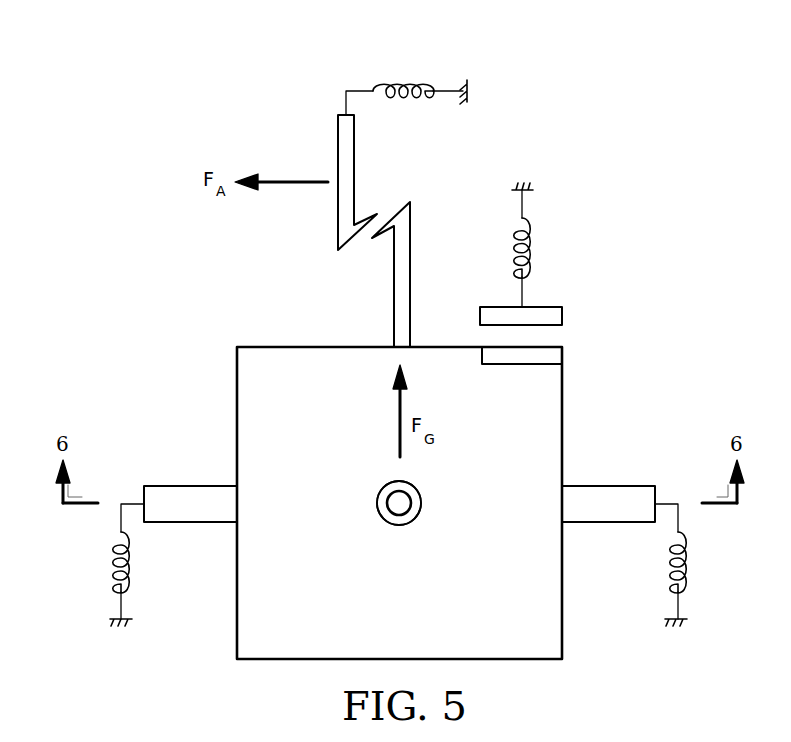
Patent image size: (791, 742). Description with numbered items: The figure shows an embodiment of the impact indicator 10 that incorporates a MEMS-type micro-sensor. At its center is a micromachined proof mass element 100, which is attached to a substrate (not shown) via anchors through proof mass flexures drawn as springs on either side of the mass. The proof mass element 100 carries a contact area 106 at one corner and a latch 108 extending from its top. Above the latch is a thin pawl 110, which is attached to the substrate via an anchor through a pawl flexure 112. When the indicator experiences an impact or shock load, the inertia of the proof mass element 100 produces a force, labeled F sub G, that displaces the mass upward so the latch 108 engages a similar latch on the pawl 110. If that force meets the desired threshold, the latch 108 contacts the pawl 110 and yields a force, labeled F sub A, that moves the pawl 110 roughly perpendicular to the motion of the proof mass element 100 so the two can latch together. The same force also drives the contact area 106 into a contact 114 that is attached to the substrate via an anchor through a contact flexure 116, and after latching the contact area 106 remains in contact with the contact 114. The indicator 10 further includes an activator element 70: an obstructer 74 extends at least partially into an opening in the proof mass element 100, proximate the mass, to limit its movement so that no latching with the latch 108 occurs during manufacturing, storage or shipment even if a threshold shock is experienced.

The impact indicator 10 is at (590, 84).
The activator element 70 is at (395, 536).
The obstructer 74 is at (423, 502).
The proof mass element 100 is at (237, 417).
The contact area 106 is at (520, 357).
The latch 108 is at (394, 300).
The pawl 110 is at (338, 133).
The pawl flexure 112 is at (405, 82).
The contact 114 is at (563, 317).
The contact flexure 116 is at (534, 247).